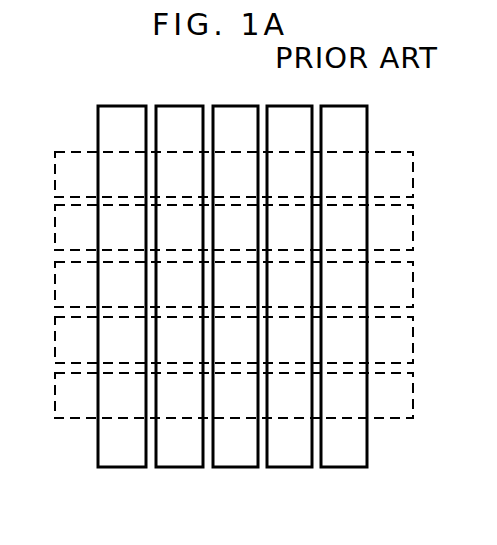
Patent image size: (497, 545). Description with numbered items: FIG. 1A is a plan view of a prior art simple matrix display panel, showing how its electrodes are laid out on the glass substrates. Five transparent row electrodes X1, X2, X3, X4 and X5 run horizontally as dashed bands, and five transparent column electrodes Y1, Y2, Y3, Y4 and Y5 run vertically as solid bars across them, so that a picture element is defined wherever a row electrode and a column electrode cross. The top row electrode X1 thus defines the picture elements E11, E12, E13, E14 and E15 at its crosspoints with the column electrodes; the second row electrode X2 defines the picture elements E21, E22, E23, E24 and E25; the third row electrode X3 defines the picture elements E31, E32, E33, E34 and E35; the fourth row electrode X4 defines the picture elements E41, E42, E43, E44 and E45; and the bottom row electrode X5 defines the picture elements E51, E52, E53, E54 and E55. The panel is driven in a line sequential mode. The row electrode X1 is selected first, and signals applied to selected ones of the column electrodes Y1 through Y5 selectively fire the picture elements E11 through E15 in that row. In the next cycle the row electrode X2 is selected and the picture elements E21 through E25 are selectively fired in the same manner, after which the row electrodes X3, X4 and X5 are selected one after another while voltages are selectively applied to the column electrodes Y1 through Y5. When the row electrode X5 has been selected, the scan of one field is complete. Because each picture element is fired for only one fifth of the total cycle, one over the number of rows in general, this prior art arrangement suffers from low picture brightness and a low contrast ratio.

The row electrode X1 is at (55, 178).
The row electrode X2 is at (55, 232).
The row electrode X3 is at (55, 288).
The row electrode X4 is at (55, 344).
The row electrode X5 is at (55, 400).
The column electrode Y1 is at (120, 468).
The column electrode Y2 is at (178, 468).
The column electrode Y3 is at (234, 468).
The column electrode Y4 is at (288, 468).
The column electrode Y5 is at (342, 468).
The picture element E11 is at (121, 176).
The picture element E12 is at (179, 176).
The picture element E13 is at (236, 176).
The picture element E14 is at (290, 176).
The picture element E15 is at (344, 176).
The picture element E21 is at (121, 229).
The picture element E22 is at (179, 229).
The picture element E23 is at (236, 229).
The picture element E24 is at (290, 229).
The picture element E25 is at (344, 229).
The picture element E31 is at (121, 286).
The picture element E32 is at (179, 286).
The picture element E33 is at (236, 286).
The picture element E34 is at (290, 286).
The picture element E35 is at (344, 286).
The picture element E41 is at (121, 341).
The picture element E42 is at (179, 341).
The picture element E43 is at (236, 341).
The picture element E44 is at (290, 341).
The picture element E45 is at (344, 341).
The picture element E51 is at (121, 397).
The picture element E52 is at (179, 397).
The picture element E53 is at (236, 397).
The picture element E54 is at (290, 397).
The picture element E55 is at (344, 397).